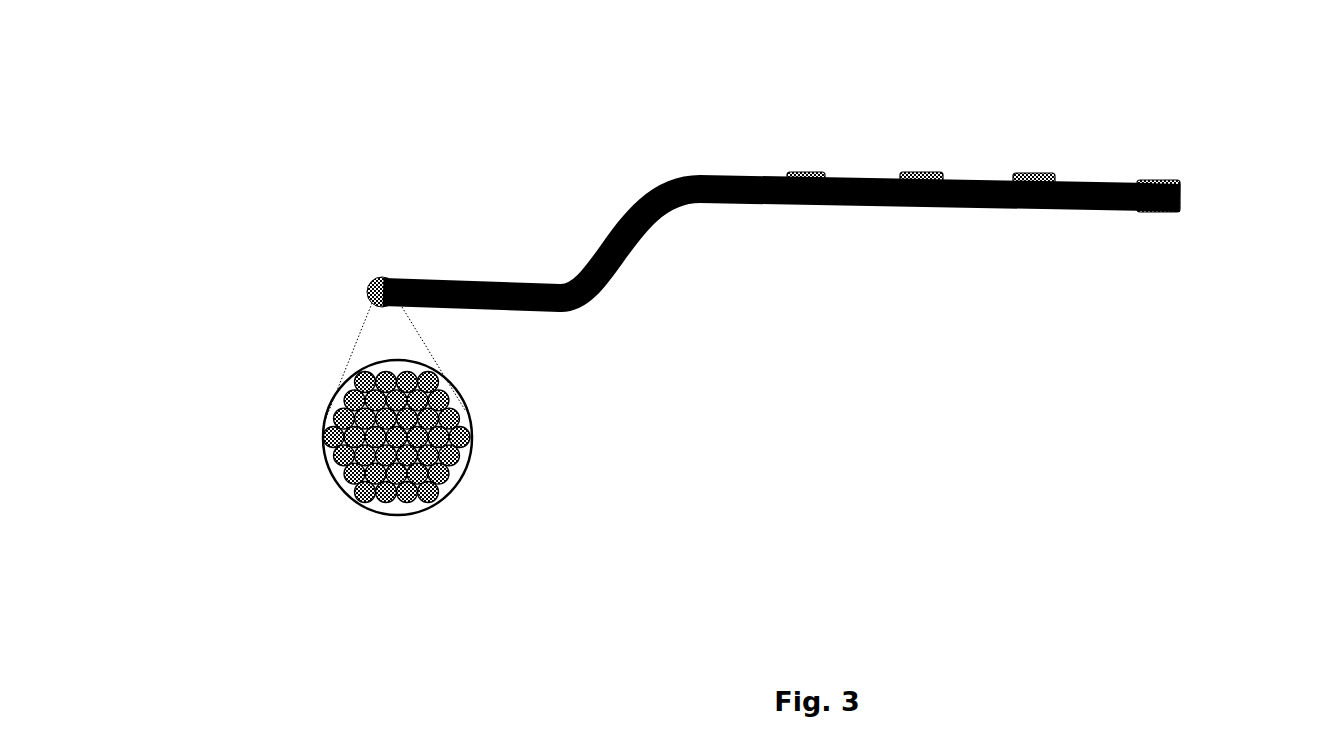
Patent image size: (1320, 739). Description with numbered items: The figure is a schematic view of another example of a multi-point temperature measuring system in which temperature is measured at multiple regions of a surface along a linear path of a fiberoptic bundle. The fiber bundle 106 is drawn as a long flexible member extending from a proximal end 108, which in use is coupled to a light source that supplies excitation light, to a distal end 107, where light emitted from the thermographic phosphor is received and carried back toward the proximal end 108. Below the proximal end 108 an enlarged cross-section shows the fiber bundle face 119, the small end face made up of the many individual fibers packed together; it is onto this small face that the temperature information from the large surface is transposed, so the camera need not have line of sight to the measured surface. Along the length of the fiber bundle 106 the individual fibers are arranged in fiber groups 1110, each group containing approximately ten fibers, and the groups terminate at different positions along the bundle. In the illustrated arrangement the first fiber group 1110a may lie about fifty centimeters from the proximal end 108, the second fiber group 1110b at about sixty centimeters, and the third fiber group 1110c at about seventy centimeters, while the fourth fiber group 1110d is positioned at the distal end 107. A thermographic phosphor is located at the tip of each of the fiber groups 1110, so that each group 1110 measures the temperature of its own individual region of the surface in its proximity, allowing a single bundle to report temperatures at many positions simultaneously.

The fiber bundle 106 is at (541, 281).
The distal end 107 is at (1165, 222).
The proximal end 108 is at (376, 279).
The fiber bundle face 119 is at (318, 433).
The fiber groups 1110 is at (938, 338).
The first fiber group 1110a is at (811, 168).
The second fiber group 1110b is at (921, 168).
The third fiber group 1110c is at (1031, 169).
The fourth fiber group 1110d is at (1156, 177).